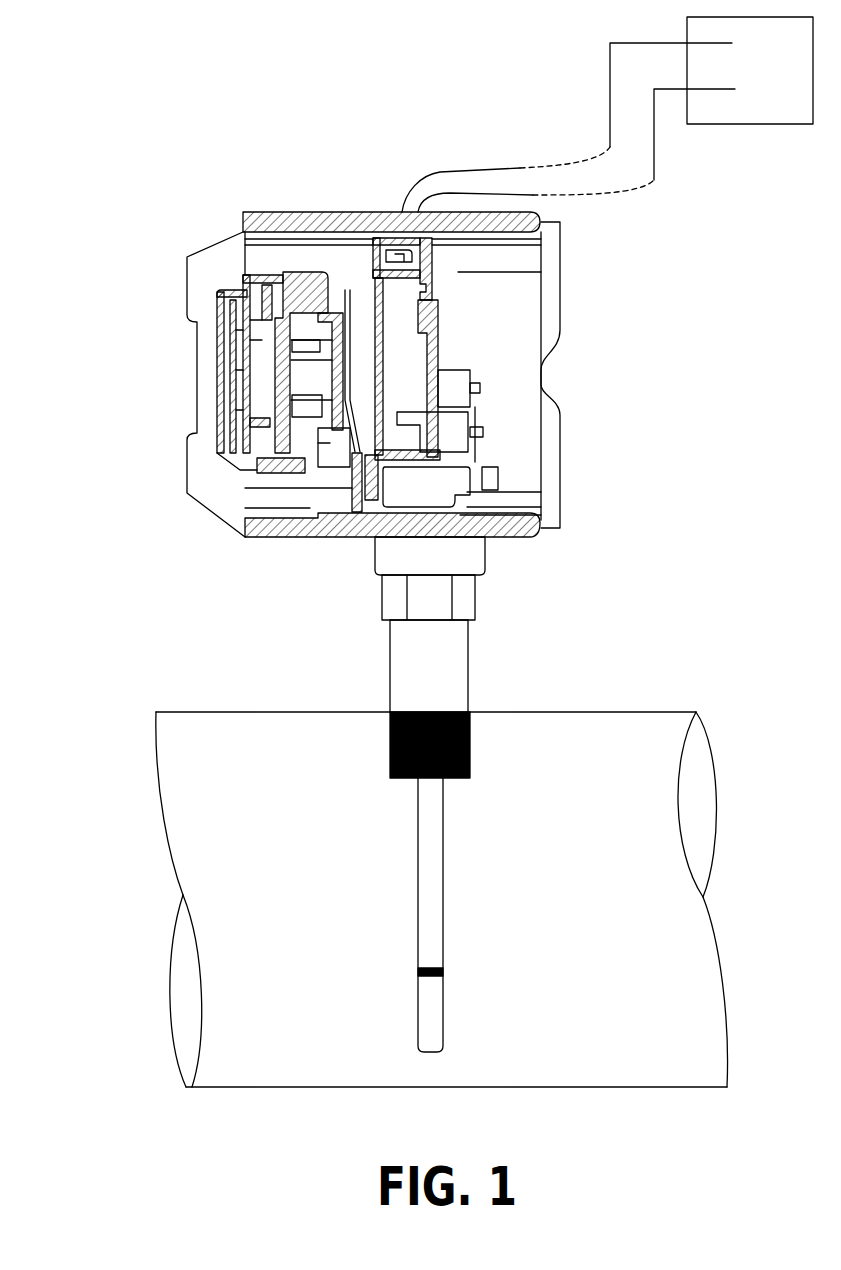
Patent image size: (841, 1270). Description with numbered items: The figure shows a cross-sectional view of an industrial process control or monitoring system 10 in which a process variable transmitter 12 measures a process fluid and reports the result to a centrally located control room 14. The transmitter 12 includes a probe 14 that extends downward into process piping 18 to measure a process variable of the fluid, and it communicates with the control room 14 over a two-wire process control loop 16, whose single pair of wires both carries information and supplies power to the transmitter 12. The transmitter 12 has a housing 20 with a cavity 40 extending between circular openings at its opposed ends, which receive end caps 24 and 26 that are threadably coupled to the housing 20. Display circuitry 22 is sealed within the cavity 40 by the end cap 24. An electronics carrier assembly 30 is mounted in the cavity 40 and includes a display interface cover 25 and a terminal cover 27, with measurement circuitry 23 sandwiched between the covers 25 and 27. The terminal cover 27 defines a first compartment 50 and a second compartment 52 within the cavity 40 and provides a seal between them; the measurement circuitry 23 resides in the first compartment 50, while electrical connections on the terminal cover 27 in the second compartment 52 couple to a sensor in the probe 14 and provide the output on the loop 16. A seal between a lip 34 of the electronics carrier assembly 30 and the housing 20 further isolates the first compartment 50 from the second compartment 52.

The industrial process control or monitoring system 10 is at (126, 116).
The process variable transmitter 12 is at (542, 541).
The control room / probe 14 is at (768, 132).
The two-wire process control loop 16 is at (654, 120).
The process piping 18 is at (585, 727).
The housing 20 is at (278, 212).
The display circuitry 22 is at (206, 408).
The measurement circuitry 23 is at (390, 256).
The end cap 24 is at (186, 283).
The display interface cover 25 is at (339, 262).
The end cap 26 is at (560, 287).
The terminal cover 27 is at (445, 346).
The electronics carrier assembly 30 is at (439, 234).
The lip 34 is at (357, 525).
The cavity 40 is at (244, 494).
The first compartment 50 is at (360, 376).
The second compartment 52 is at (513, 260).